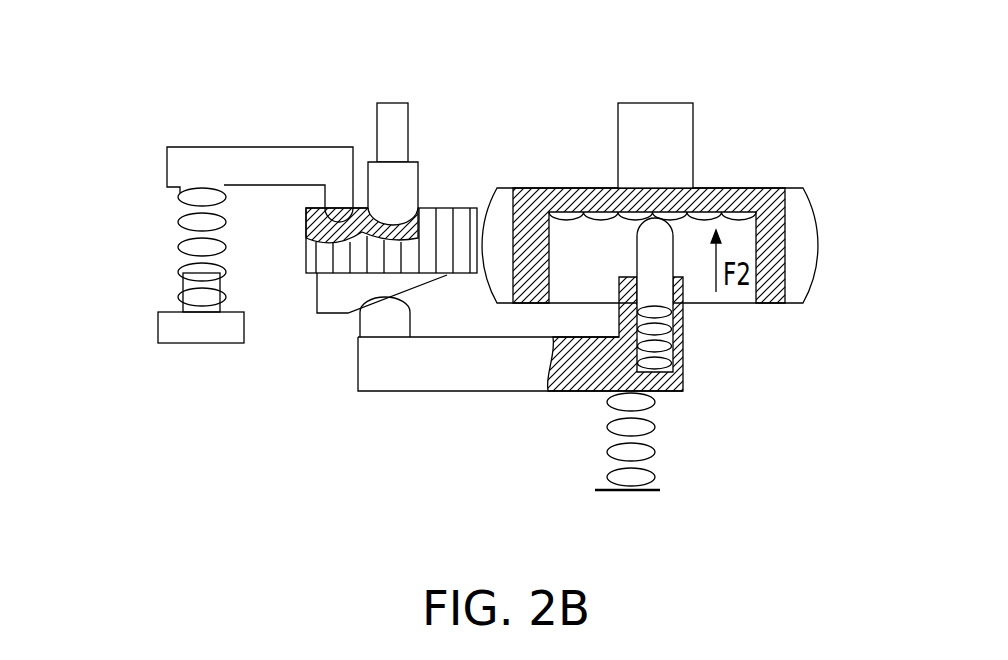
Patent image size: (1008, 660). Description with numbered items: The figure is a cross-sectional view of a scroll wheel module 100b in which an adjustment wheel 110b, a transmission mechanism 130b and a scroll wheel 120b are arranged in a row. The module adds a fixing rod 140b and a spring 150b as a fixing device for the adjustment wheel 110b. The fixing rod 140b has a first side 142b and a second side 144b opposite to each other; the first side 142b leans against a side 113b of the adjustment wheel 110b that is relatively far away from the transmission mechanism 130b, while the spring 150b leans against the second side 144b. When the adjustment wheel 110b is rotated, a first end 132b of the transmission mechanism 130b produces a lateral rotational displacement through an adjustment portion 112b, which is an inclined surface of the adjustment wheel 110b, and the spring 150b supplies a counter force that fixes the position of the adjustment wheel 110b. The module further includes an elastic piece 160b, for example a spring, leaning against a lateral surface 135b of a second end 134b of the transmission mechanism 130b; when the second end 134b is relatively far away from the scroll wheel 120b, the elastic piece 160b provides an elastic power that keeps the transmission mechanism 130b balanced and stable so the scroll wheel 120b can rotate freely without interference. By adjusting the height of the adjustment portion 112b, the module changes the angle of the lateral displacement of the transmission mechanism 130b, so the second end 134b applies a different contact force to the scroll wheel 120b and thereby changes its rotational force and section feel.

The scroll wheel module 100b is at (853, 491).
The adjustment wheel 110b is at (435, 217).
The adjustment portion 112b is at (325, 297).
The side of the adjustment wheel 113b is at (363, 205).
The scroll wheel 120b is at (802, 247).
The transmission mechanism 130b is at (493, 373).
The first end of the transmission mechanism 132b is at (378, 322).
The second end of the transmission mechanism 134b is at (658, 256).
The lateral surface of the second end 135b is at (568, 395).
The fixing rod 140b is at (268, 165).
The first side of the fixing rod 142b is at (340, 171).
The second side of the fixing rod 144b is at (200, 168).
The spring 150b is at (187, 243).
The elastic piece 160b is at (638, 472).